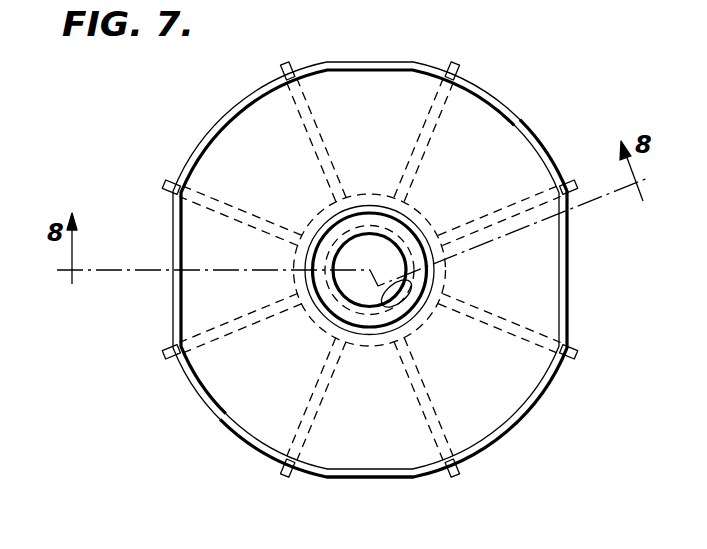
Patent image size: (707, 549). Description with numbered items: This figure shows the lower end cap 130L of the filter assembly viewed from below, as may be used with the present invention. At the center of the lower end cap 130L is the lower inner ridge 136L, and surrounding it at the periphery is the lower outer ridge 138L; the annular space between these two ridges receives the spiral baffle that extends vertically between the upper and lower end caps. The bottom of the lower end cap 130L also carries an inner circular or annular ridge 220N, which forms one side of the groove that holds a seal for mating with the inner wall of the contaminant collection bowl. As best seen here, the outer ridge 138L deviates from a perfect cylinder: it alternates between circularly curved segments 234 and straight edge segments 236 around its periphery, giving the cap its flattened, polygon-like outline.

The lower end cap 130L is at (522, 124).
The lower inner ridge 136L is at (426, 233).
The lower outer ridge 138L is at (543, 384).
The inner annular ridge 220N is at (412, 306).
The circularly curved segments 234 is at (235, 428).
The straight edge segments 236 is at (393, 481).